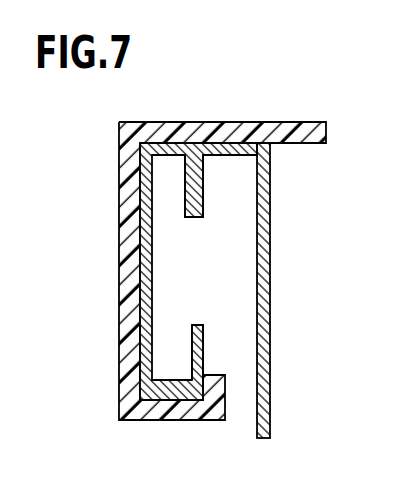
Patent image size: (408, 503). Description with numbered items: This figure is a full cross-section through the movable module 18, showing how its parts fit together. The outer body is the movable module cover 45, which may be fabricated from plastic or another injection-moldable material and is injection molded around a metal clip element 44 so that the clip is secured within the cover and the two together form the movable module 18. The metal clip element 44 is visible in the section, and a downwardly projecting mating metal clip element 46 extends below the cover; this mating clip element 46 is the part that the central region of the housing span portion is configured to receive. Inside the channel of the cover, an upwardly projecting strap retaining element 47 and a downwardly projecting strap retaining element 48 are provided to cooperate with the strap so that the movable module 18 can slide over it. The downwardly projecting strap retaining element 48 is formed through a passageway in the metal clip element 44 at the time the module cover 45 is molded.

The movable module 18 is at (228, 88).
The metal clip element 44 is at (287, 250).
The movable module cover 45 is at (177, 124).
The mating metal clip element 46 is at (270, 320).
The upwardly projecting strap retaining element 47 is at (198, 343).
The downwardly projecting strap retaining element 48 is at (203, 193).